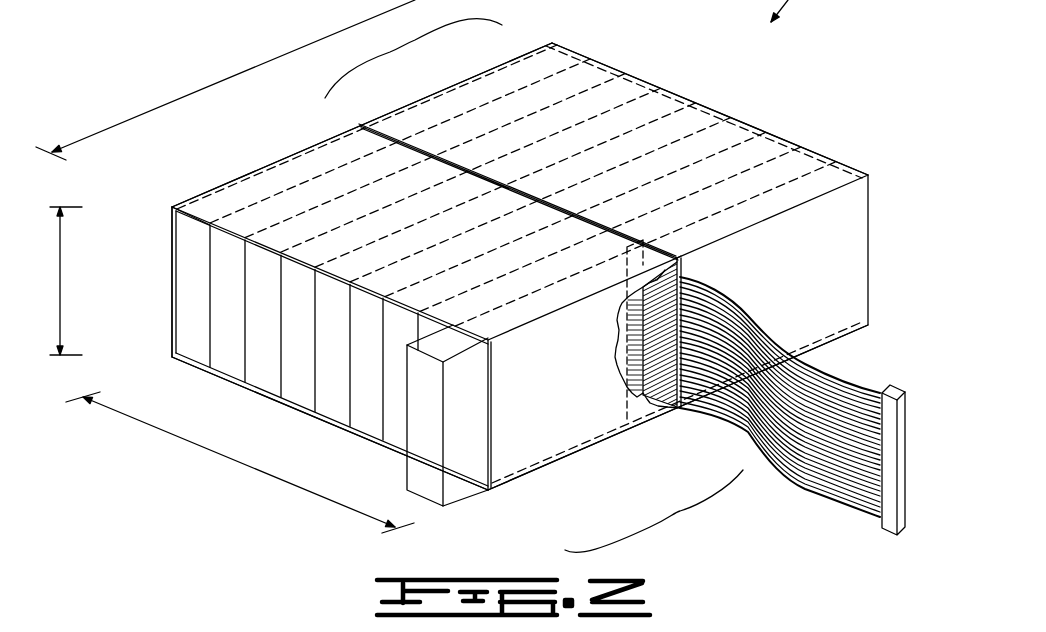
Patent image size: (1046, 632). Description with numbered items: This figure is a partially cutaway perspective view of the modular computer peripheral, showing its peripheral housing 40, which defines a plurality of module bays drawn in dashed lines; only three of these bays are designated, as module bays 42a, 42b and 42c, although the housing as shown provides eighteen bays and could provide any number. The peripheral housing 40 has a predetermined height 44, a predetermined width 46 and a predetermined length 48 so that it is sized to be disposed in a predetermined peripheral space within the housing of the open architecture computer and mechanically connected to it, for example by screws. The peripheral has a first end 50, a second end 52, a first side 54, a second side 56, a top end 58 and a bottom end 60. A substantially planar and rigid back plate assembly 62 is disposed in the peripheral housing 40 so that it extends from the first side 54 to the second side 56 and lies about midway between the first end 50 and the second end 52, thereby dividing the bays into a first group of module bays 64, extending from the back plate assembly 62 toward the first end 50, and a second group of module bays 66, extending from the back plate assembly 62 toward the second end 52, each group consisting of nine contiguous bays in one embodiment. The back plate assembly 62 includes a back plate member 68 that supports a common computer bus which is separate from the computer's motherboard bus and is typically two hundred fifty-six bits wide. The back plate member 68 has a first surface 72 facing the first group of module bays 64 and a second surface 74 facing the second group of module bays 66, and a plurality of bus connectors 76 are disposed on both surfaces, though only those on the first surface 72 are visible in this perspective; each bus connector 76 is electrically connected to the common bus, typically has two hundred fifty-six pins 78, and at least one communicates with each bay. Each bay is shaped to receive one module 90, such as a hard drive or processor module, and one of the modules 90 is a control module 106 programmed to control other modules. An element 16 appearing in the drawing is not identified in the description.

The ribbon cable 16 is at (825, 495).
The peripheral housing 40 is at (870, 243).
The module bay 42a is at (636, 432).
The module bay 42b is at (705, 118).
The module bay 42c is at (795, 170).
The predetermined height 44 is at (63, 272).
The predetermined width 46 is at (188, 445).
The predetermined length 48 is at (240, 72).
The first end 50 is at (173, 297).
The second end 52 is at (650, 83).
The first side 54 is at (285, 158).
The second side 56 is at (520, 480).
The top end 58 is at (233, 202).
The bottom end 60 is at (243, 378).
The back plate assembly 62 is at (393, 130).
The first group of module bays 64 is at (654, 512).
The second group of module bays 66 is at (413, 58).
The back plate member 68 is at (683, 406).
The first surface 72 is at (655, 407).
The second surface 74 is at (683, 260).
The bus connectors 76 is at (667, 302).
The pins 78 is at (681, 275).
The module 90 is at (590, 77).
The control module 106 is at (195, 335).